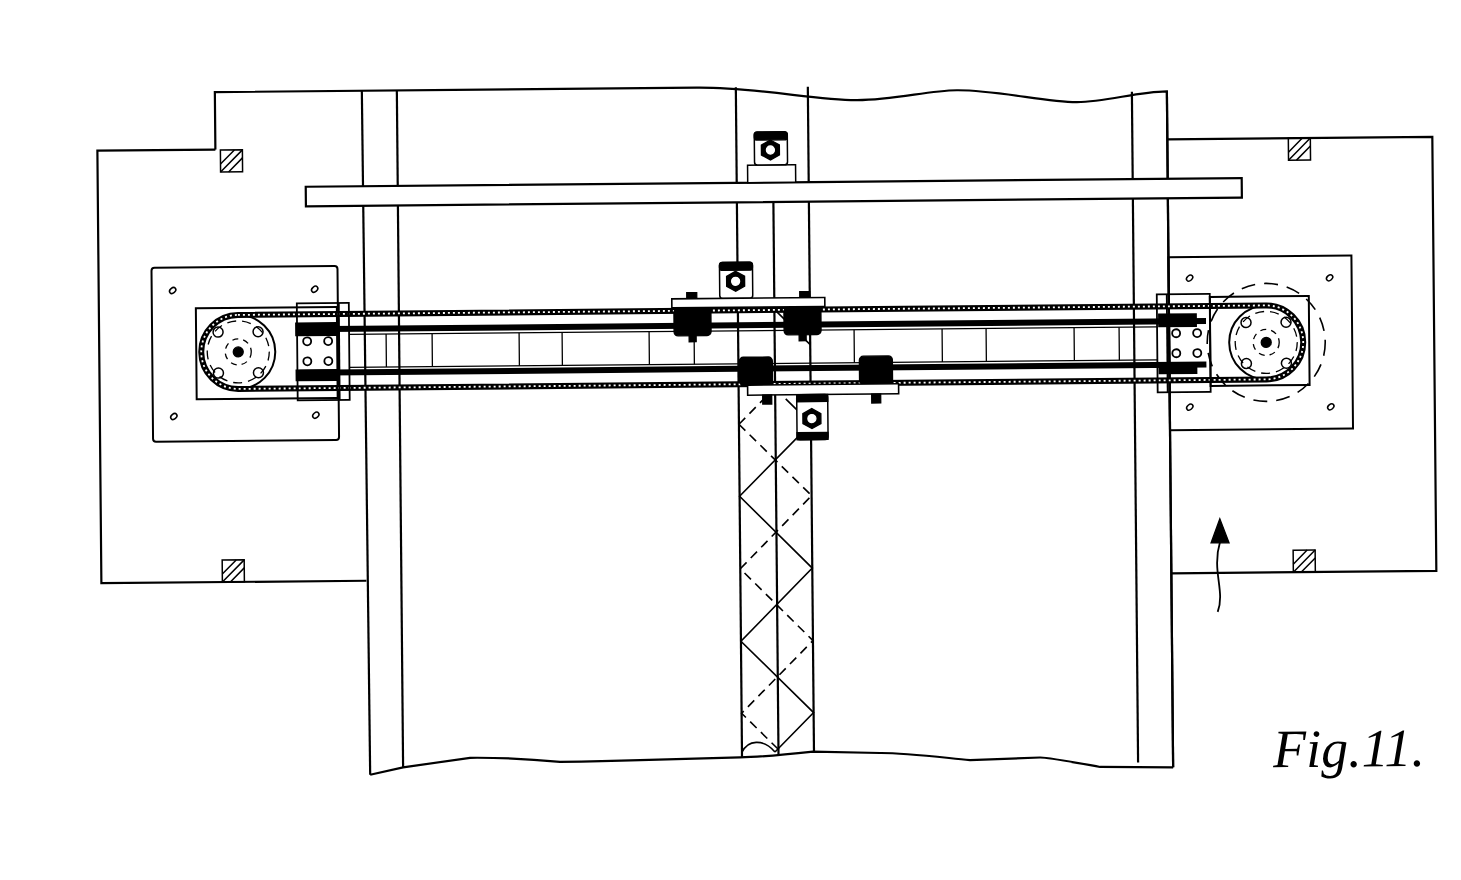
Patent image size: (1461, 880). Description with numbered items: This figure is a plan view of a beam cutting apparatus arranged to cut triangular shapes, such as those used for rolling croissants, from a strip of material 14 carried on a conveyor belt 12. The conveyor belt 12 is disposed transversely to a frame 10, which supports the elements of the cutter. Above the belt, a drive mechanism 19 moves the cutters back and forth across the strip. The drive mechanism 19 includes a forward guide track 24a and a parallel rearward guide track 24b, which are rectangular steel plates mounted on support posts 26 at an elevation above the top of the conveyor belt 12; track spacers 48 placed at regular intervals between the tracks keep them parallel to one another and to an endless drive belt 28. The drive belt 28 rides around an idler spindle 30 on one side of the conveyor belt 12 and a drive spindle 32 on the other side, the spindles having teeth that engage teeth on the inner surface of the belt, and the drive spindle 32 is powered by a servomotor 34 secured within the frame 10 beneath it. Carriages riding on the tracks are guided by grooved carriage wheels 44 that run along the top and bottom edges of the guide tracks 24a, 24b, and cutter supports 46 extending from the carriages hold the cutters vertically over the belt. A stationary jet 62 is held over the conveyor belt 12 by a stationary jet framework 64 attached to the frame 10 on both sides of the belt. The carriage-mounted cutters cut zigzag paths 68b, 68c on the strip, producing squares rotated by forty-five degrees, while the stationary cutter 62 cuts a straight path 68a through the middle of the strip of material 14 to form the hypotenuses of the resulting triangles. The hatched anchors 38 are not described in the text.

The frame 10 is at (1375, 144).
The conveyor belt 12 is at (1057, 138).
The strip of material 14 is at (775, 118).
The drive mechanism 19 is at (1216, 578).
The forward guide track 24a is at (1025, 383).
The rearward guide track 24b is at (1021, 307).
The support posts 26 is at (323, 296).
The endless drive belt 28 is at (446, 387).
The idler spindle 30 is at (246, 376).
The drive spindle 32 is at (1256, 395).
The servomotor 34 is at (1293, 435).
The mounting anchors 38 is at (230, 145).
The carriage wheels 44 is at (941, 372).
The cutter supports 46 is at (724, 268).
The track spacers 48 is at (416, 337).
The stationary jet 62 is at (757, 146).
The stationary jet framework 64 is at (962, 190).
The straight path 68a is at (776, 752).
The zigzag path 68b is at (755, 745).
The zigzag path 68c is at (818, 751).